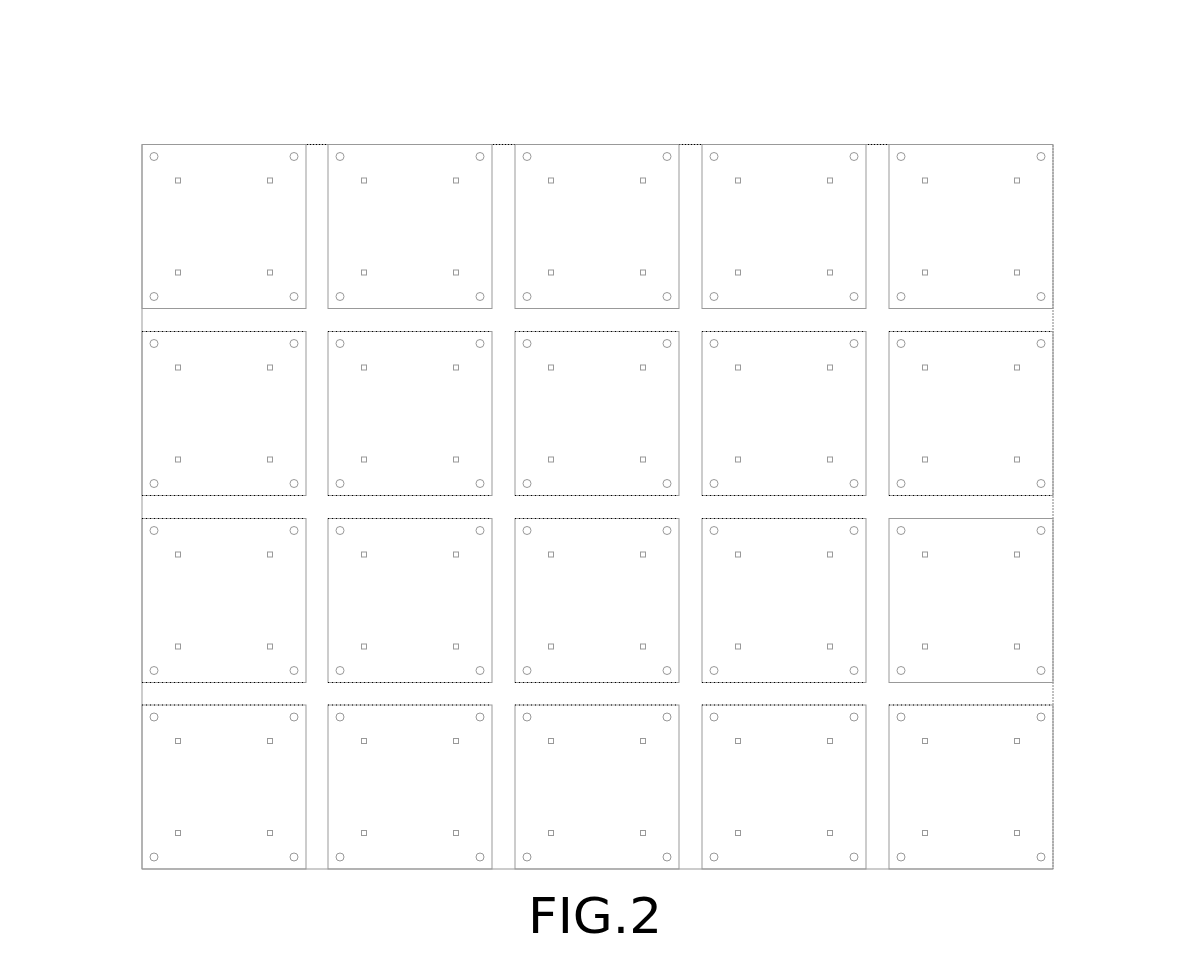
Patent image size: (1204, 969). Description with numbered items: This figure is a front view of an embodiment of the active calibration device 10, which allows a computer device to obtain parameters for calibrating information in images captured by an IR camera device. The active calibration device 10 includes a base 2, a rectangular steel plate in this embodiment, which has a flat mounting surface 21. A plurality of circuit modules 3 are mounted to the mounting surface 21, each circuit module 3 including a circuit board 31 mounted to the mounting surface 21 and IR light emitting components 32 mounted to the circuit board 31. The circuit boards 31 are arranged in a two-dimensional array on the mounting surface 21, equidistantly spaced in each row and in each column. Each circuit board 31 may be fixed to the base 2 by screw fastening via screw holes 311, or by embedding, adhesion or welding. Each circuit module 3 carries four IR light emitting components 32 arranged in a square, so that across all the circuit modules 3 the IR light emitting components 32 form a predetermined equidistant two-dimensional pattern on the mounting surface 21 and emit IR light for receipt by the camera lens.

The active calibration device 10 is at (221, 98).
The base 2 is at (498, 121).
The mounting surface 21 is at (1038, 322).
The circuit module 3 is at (967, 125).
The circuit board 31 is at (1020, 232).
The screw hole 311 is at (905, 530).
The IR light emitting component 32 is at (924, 270).